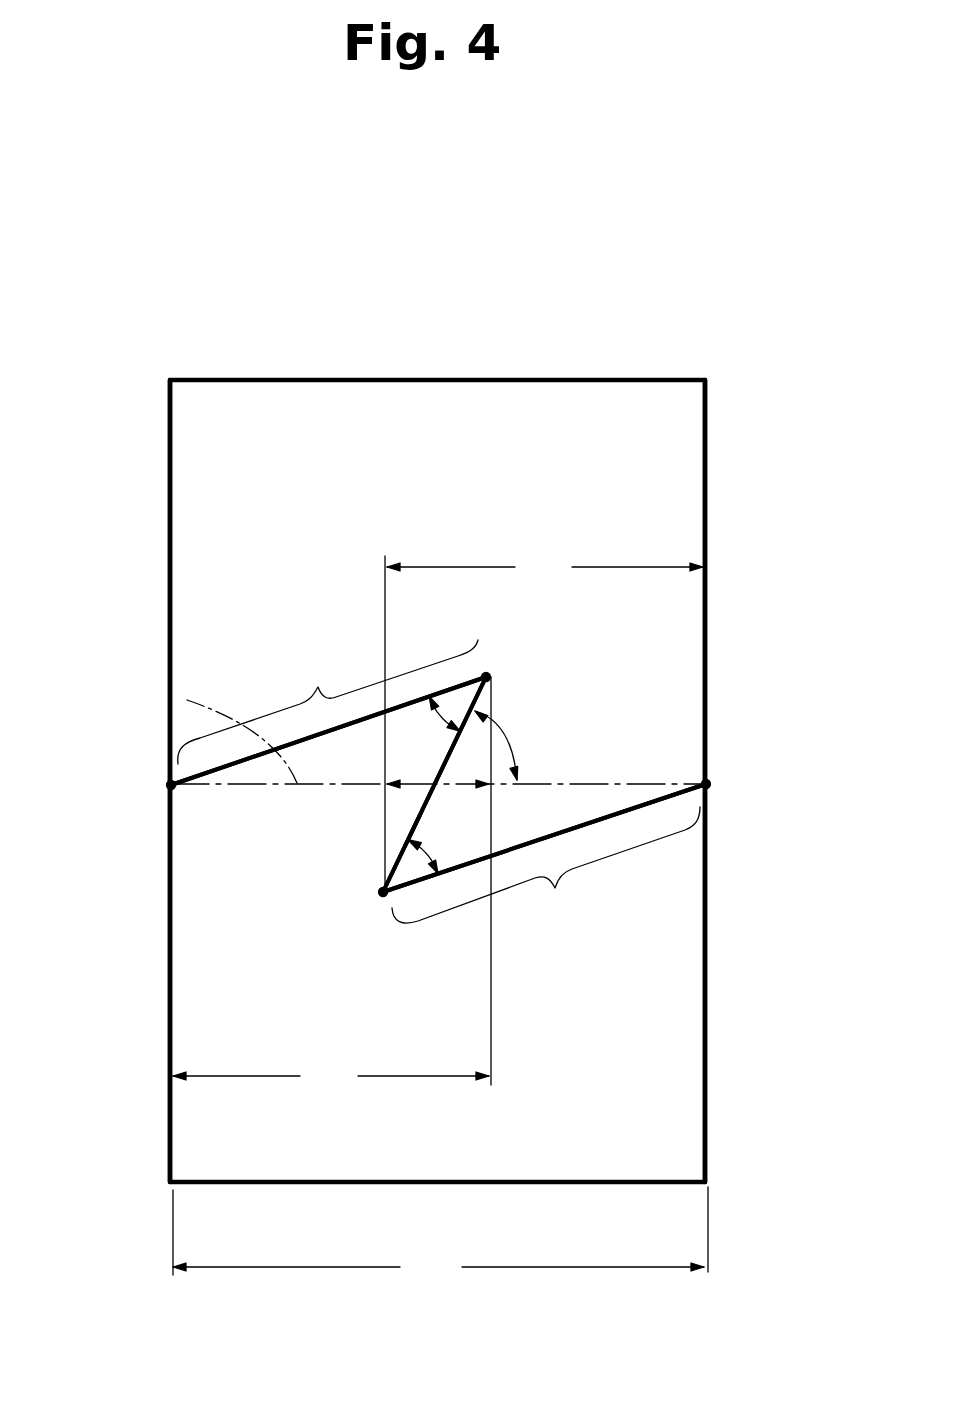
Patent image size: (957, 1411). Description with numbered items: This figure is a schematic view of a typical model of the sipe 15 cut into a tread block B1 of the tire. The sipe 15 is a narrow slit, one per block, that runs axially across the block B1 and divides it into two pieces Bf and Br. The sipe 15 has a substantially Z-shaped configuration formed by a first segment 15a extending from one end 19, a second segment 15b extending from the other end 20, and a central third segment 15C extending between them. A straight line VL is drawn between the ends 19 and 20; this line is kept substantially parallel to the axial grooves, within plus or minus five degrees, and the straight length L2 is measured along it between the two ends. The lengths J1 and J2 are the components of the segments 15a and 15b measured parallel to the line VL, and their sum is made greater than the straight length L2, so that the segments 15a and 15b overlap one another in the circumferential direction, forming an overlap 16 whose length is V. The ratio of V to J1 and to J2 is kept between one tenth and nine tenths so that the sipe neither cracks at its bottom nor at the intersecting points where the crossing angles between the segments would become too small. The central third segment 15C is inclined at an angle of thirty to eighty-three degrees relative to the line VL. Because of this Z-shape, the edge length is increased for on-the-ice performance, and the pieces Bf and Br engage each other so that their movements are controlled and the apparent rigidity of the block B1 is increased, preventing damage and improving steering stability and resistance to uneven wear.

The block B1 is at (595, 422).
The piece of block Bf is at (193, 507).
The piece of block Br is at (687, 1095).
The sipe 15 is at (638, 797).
The first segment 15a is at (328, 712).
The second segment 15b is at (544, 859).
The third segment 15C is at (490, 677).
The overlap 16 is at (405, 797).
The end of sipe 19 is at (171, 787).
The end of sipe 20 is at (706, 784).
The length of overlap V is at (412, 838).
The straight line VL is at (253, 730).
The length of component of first segment J1 is at (331, 1076).
The length of component of second segment J2 is at (545, 567).
The straight length L2 is at (440, 1236).